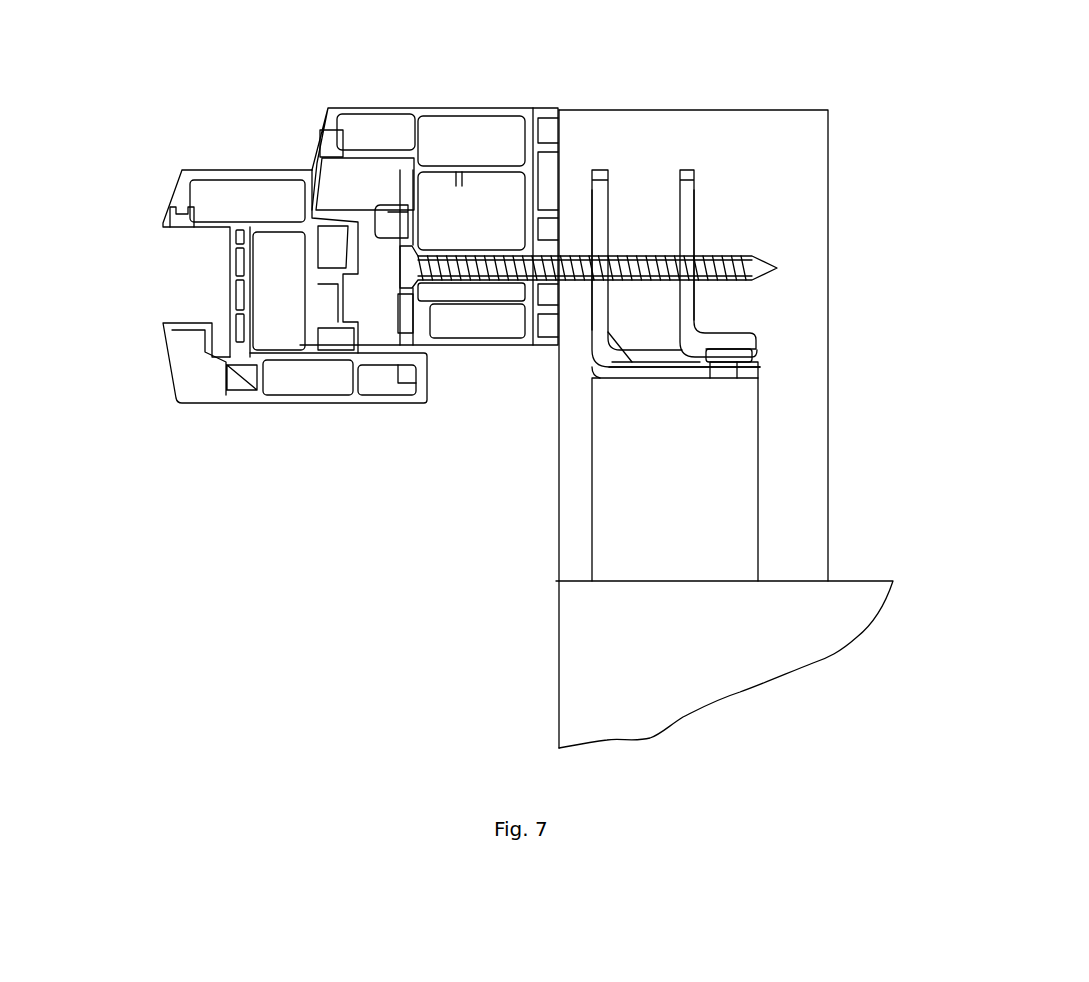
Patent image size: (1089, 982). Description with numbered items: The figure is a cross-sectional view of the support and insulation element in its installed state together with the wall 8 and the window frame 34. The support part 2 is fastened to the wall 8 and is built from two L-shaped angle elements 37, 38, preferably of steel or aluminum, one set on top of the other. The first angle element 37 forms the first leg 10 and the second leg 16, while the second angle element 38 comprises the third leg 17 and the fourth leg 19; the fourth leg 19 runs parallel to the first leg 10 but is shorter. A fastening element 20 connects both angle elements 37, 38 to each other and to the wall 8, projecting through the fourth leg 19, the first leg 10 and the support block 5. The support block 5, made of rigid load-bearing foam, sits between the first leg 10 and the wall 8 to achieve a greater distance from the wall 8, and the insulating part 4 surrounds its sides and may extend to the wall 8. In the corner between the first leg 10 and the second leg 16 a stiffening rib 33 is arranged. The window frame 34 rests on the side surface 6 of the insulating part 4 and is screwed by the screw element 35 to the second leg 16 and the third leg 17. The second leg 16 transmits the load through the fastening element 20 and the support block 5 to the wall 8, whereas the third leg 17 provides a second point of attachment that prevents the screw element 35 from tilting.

The support part 2 is at (745, 368).
The insulating part 4 is at (792, 170).
The support block 5 is at (725, 458).
The side surface 6 is at (556, 450).
The wall 8 is at (763, 657).
The first leg 10 is at (655, 372).
The second leg 16 is at (598, 198).
The third leg 17 is at (683, 232).
The fourth leg 19 is at (752, 363).
The fastening element 20 is at (738, 352).
The stiffening rib 33 is at (612, 362).
The window frame 34 is at (300, 165).
The screw element 35 is at (770, 270).
The first angle element 37 is at (597, 180).
The second angle element 38 is at (688, 182).